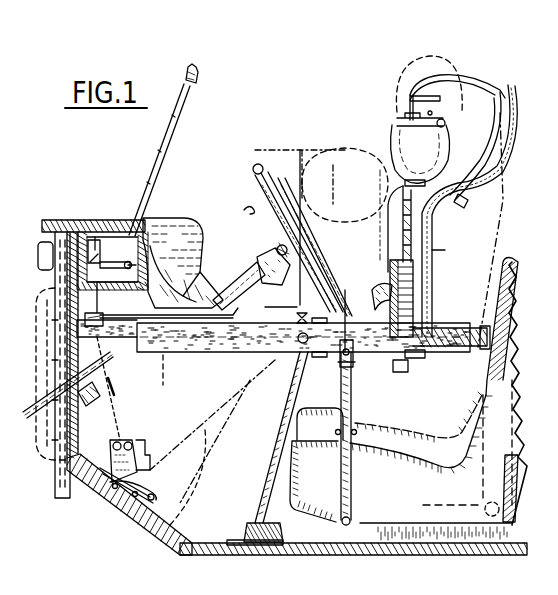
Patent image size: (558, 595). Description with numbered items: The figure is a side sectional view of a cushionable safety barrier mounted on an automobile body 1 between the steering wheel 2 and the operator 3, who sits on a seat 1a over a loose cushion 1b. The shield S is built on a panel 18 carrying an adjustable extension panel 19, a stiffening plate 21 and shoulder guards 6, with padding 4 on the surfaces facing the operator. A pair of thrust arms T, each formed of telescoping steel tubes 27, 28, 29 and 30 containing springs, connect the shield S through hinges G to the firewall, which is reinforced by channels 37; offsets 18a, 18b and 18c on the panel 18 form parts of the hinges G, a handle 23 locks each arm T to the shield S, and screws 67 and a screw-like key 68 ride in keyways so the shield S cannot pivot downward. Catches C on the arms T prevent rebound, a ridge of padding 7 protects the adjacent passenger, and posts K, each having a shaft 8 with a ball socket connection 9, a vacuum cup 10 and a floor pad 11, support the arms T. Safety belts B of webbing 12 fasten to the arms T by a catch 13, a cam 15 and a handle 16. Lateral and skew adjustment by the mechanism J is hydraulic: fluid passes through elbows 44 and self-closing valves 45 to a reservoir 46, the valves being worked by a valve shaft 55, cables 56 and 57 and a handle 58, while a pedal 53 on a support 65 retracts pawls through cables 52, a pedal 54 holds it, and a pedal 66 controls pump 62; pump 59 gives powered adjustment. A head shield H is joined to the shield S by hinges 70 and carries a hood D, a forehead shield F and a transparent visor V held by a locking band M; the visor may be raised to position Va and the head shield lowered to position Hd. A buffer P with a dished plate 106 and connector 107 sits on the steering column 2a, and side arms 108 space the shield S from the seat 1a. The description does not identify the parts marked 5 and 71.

The automobile body 1 is at (178, 548).
The operator's seat 1a is at (523, 467).
The loose cushion 1b is at (425, 438).
The steering wheel 2 is at (253, 167).
The steering column 2a is at (228, 283).
The operator 3 is at (337, 52).
The cushioning padding 4 is at (506, 97).
The section line 5 is at (34, 305).
The shoulder guard 6 is at (461, 204).
The ridge of padding 7 is at (515, 180).
The shaft 8 is at (267, 448).
The ball socket connection 9 is at (474, 290).
The vacuum cup 10 is at (250, 528).
The smooth faced pad 11 is at (232, 540).
The fabric webbing 12 is at (347, 295).
The catch 13 is at (26, 233).
The cam 15 is at (388, 50).
The handle 16 is at (353, 366).
The panel 18 is at (388, 128).
The offset 18a is at (432, 268).
The offset 18b is at (460, 324).
The offset 18c is at (424, 354).
The extension panel 19 is at (425, 360).
The stiffening plate 21 is at (388, 222).
The handle 23 is at (384, 296).
The steel tube 27 is at (388, 362).
The steel tube 28 is at (262, 388).
The steel tube 29 is at (200, 375).
The steel tube 30 is at (122, 340).
The structural channel 37 is at (56, 478).
The elbow 44 is at (103, 292).
The self-closing valve 45 is at (90, 250).
The reservoir 46 is at (40, 254).
The cable 52 is at (90, 408).
The pedal 53 is at (108, 470).
The pedal 54 is at (155, 500).
The valve shaft 55 is at (118, 257).
The cable 56 is at (112, 372).
The cable 57 is at (118, 425).
The handle 58 is at (114, 389).
The pump 59 is at (96, 236).
The pump 62 is at (141, 205).
The support 65 is at (135, 438).
The pedal 66 is at (150, 450).
The machine screw 67 is at (240, 353).
The key 68 is at (316, 335).
The hinge 70 is at (410, 200).
The neck piece 71 is at (433, 215).
The dished plate 106 is at (265, 214).
The connector 107 is at (277, 246).
The side arm 108 is at (478, 350).
The safety belt B is at (359, 496).
The catch C is at (242, 314).
The hood D is at (489, 79).
The forehead shield F is at (420, 154).
The hinge G is at (414, 294).
The head shield H is at (470, 197).
The lowered position of head shield Hd is at (345, 150).
The skewing and adjusting mechanism J is at (116, 236).
The post K is at (258, 485).
The locking band M is at (393, 114).
The buffer P is at (276, 238).
The shield S is at (436, 253).
The thrust arm T is at (190, 357).
The visor V is at (381, 139).
The raised position of visor Va is at (421, 51).